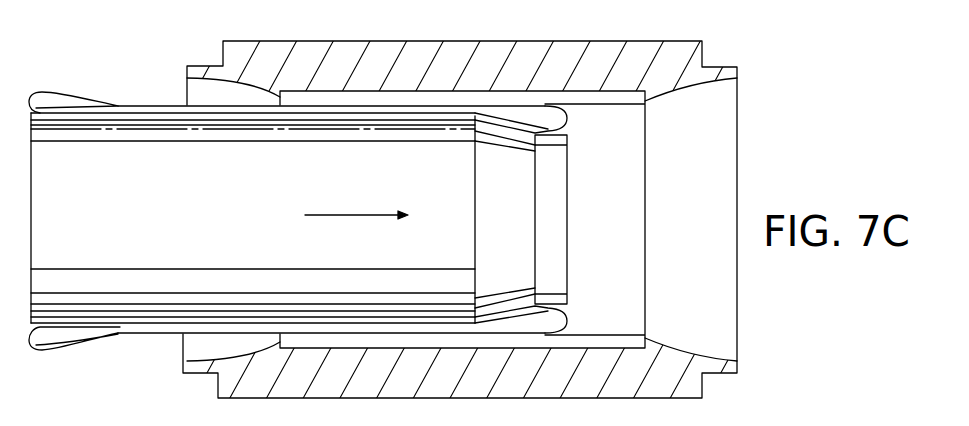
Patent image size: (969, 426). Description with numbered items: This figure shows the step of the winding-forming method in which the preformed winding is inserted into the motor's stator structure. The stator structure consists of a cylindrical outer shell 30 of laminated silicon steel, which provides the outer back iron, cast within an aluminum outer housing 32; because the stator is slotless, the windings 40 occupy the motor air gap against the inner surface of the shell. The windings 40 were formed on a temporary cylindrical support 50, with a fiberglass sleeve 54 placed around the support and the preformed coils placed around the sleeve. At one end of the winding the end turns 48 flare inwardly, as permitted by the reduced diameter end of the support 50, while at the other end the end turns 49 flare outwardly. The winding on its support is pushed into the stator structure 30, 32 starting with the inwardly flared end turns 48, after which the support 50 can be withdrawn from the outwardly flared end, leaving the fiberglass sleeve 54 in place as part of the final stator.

The cylindrical outer shell 30 is at (408, 97).
The aluminum outer housing 32 is at (511, 50).
The windings 40 is at (268, 9).
The end turns 48 is at (560, 124).
The end turns 49 is at (72, 97).
The temporary cylindrical support 50 is at (560, 187).
The fiberglass sleeve 54 is at (257, 115).